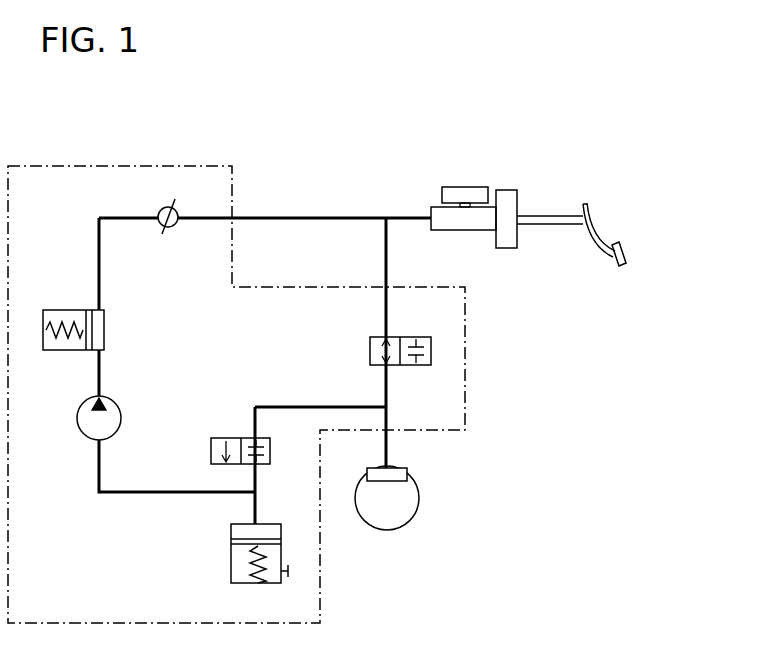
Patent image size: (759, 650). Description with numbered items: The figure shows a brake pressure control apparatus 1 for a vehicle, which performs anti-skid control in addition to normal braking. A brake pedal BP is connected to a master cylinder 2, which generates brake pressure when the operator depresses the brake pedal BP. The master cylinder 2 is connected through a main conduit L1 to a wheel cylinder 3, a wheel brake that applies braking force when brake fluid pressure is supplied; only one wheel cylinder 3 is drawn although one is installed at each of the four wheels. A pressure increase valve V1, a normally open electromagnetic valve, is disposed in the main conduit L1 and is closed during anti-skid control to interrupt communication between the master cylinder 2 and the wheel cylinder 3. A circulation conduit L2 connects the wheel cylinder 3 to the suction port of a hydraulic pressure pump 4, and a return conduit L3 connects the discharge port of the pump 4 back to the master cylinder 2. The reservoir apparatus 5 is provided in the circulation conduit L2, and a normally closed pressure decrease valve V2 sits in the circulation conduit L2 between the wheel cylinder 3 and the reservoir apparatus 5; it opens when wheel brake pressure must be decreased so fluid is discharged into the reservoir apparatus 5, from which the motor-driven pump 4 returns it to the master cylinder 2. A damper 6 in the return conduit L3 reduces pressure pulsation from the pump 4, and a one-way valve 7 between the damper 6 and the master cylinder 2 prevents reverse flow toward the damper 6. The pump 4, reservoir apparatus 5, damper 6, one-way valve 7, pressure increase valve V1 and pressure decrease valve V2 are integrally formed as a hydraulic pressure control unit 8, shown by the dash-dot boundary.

The brake pressure control apparatus 1 is at (473, 146).
The master cylinder 2 is at (506, 190).
The wheel cylinder 3 is at (410, 470).
The hydraulic pressure pump 4 is at (120, 408).
The reservoir apparatus 5 is at (231, 562).
The damper 6 is at (66, 310).
The one-way valve 7 is at (161, 207).
The hydraulic pressure control unit 8 is at (235, 190).
The brake pedal BP is at (598, 233).
The main conduit L1 is at (386, 262).
The circulation conduit L2 is at (143, 493).
The return conduit L3 is at (99, 276).
The pressure increase valve V1 is at (370, 351).
The pressure decrease valve V2 is at (211, 451).